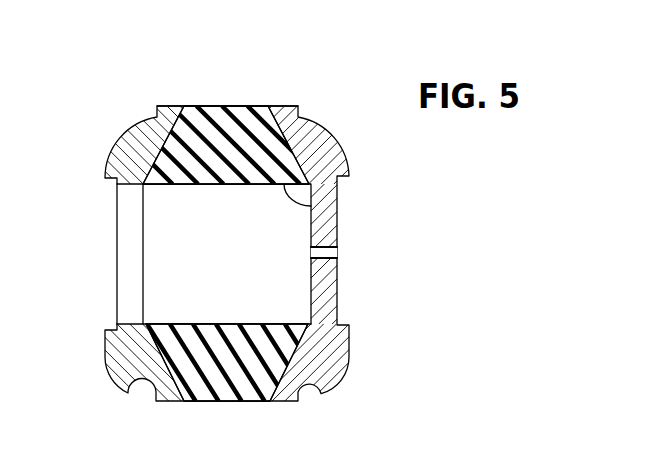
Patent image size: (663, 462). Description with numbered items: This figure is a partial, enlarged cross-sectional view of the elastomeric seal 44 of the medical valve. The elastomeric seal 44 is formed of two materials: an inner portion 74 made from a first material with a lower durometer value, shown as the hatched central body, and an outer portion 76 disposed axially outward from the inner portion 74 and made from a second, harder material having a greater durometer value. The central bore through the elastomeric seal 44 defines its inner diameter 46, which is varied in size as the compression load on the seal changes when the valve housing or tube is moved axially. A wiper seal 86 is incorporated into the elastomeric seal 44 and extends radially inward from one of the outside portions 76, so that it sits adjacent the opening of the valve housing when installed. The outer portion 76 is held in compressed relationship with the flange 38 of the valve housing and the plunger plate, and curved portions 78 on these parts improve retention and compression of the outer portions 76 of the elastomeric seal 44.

The outer portion 76 is at (135, 142).
The inner portion 74 is at (208, 130).
The elastomeric seal 44 is at (242, 97).
The inner diameter 46 is at (312, 206).
The wiper seal 86 is at (337, 285).
The flange 38 is at (104, 338).
The curved portions 78 is at (167, 401).